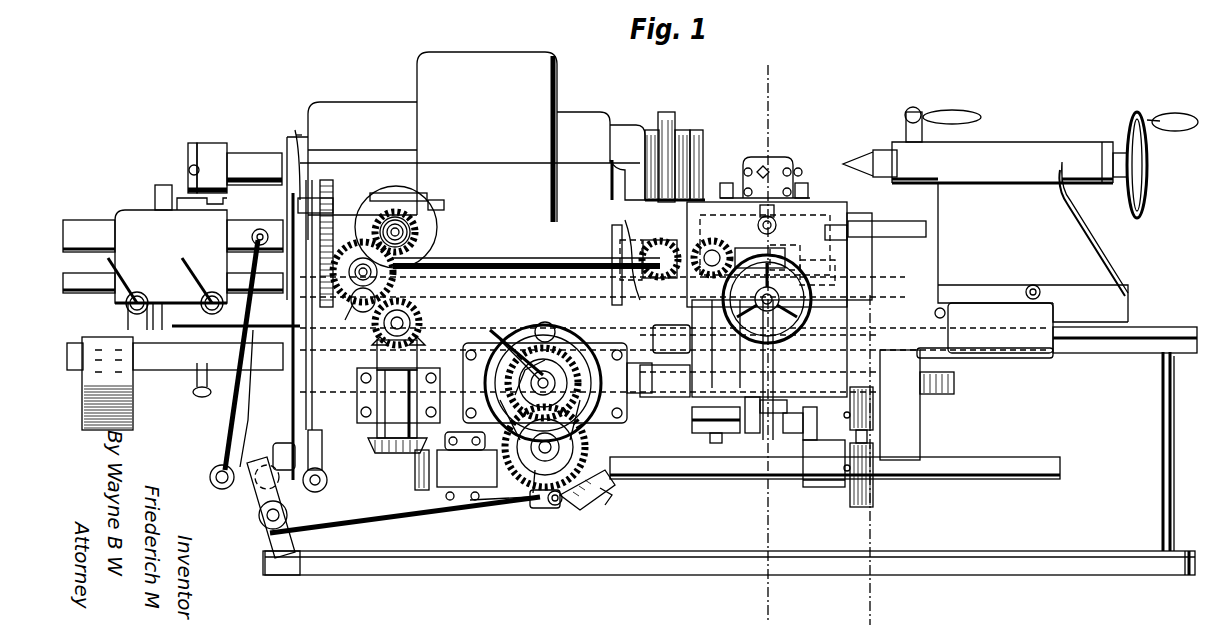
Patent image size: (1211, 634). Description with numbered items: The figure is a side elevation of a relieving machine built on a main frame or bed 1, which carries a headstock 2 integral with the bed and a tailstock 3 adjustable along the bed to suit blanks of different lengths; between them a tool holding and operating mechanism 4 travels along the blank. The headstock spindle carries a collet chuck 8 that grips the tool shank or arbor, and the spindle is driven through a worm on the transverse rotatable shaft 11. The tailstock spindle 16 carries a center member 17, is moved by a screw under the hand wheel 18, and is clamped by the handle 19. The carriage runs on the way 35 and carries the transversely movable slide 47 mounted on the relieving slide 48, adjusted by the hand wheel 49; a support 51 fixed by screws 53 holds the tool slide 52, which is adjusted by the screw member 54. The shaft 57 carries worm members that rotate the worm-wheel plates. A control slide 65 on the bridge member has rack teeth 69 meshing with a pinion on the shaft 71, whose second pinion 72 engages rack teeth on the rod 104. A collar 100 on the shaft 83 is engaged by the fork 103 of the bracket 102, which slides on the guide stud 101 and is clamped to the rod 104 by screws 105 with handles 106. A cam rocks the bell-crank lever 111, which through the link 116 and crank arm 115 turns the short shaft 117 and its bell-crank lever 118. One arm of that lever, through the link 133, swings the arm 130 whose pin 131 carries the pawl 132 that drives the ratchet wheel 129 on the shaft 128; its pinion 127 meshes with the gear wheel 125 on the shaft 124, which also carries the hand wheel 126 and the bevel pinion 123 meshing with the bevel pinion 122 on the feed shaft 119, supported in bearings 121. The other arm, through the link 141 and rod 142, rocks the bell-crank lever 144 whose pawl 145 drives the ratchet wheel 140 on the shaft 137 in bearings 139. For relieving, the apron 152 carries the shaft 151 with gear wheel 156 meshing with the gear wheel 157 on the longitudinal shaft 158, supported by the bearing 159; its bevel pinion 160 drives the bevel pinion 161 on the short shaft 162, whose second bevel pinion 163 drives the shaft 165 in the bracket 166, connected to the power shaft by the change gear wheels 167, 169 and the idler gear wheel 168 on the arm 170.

The main frame or bed 1 is at (1120, 576).
The headstock 2 is at (592, 95).
The tailstock 3 is at (1032, 125).
The tool holding and operating mechanism 4 is at (811, 153).
The collet chuck 8 is at (700, 110).
The transverse rotatable shaft 11 is at (405, 232).
The tailstock spindle 16 is at (890, 135).
The center member 17 is at (862, 160).
The hand wheel 18 is at (1148, 198).
The handle 19 is at (966, 116).
The way 35 is at (810, 275).
The transversely movable slide 47 is at (810, 268).
The relieving slide 48 is at (835, 283).
The hand wheel 49 is at (745, 338).
The support 51 is at (800, 225).
The tool slide 52 is at (850, 222).
The screws 53 is at (760, 248).
The screw member 54 is at (775, 218).
The shaft 57 is at (712, 240).
The control slide 65 is at (918, 213).
The rack teeth 69 is at (620, 235).
The shaft 71 is at (632, 203).
The second pinion 72 is at (612, 290).
The shaft 83 is at (245, 153).
The annularly grooved collar 100 is at (197, 140).
The longitudinal guide stud 101 is at (88, 220).
The bracket 102 is at (128, 205).
The fork 103 is at (190, 172).
The rod 104 is at (268, 325).
The screws 105 is at (185, 302).
The handles 106 is at (142, 278).
The bell-crank lever 111 is at (268, 218).
The crank arm 115 is at (250, 410).
The link 116 is at (248, 388).
The short shaft 117 is at (265, 460).
The bell-crank lever 118 is at (262, 512).
The feed shaft 119 is at (688, 398).
The bearings 121 is at (622, 338).
The bevel pinion 122 is at (543, 381).
The second bevel pinion 123 is at (520, 360).
The shaft 124 is at (518, 345).
The gear wheel 125 is at (590, 425).
The hand wheel 126 is at (585, 330).
The pinion 127 is at (525, 500).
The shaft 128 is at (560, 447).
The ratchet wheel 129 is at (500, 516).
The swinging arm 130 is at (565, 512).
The pin 131 is at (612, 485).
The pawl 132 is at (605, 508).
The link 133 is at (372, 512).
The shaft 137 is at (520, 262).
The bearings 139 is at (605, 252).
The ratchet wheel 140 is at (365, 205).
The link 141 is at (322, 465).
The rod 142 is at (330, 362).
The bell-crank lever 144 is at (302, 170).
The pawl 145 is at (345, 172).
The shaft 151 is at (918, 410).
The apron 152 is at (830, 495).
The gear wheel 156 is at (892, 395).
The second gear wheel 157 is at (858, 512).
The longitudinal shaft 158 is at (1000, 452).
The bearing 159 is at (445, 508).
The bevel pinion 160 is at (415, 490).
The bevel pinion 161 is at (378, 455).
The short shaft 162 is at (417, 357).
The second bevel pinion 163 is at (418, 345).
The shaft 165 is at (408, 320).
The bracket 166 is at (377, 388).
The gear wheel 167 is at (375, 318).
The idler gear wheel 168 is at (395, 280).
The gear wheel 169 is at (410, 225).
The arm 170 is at (337, 318).